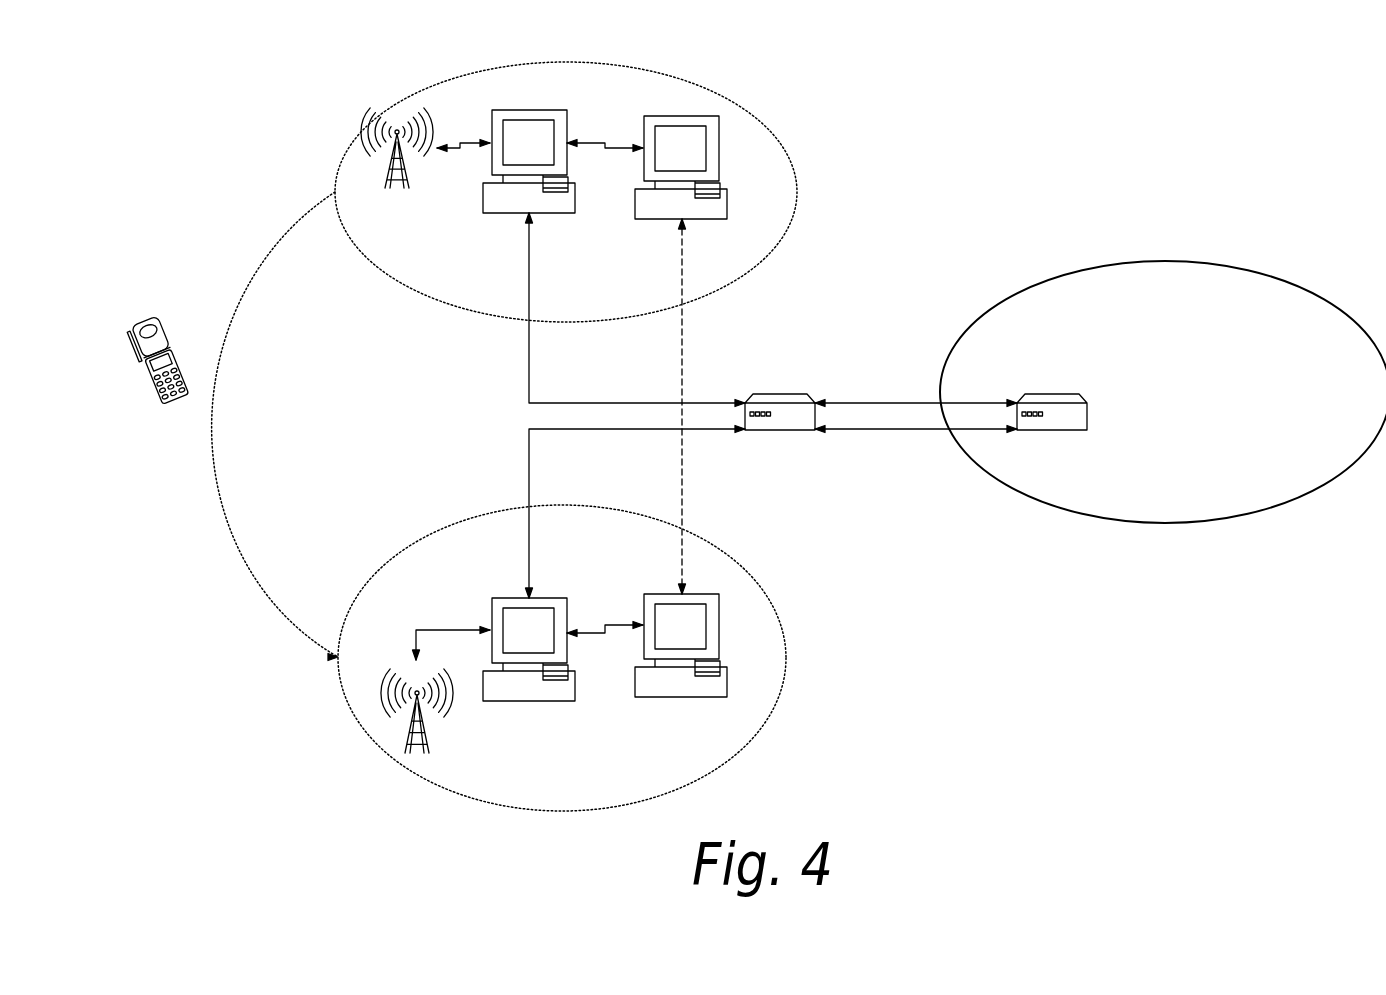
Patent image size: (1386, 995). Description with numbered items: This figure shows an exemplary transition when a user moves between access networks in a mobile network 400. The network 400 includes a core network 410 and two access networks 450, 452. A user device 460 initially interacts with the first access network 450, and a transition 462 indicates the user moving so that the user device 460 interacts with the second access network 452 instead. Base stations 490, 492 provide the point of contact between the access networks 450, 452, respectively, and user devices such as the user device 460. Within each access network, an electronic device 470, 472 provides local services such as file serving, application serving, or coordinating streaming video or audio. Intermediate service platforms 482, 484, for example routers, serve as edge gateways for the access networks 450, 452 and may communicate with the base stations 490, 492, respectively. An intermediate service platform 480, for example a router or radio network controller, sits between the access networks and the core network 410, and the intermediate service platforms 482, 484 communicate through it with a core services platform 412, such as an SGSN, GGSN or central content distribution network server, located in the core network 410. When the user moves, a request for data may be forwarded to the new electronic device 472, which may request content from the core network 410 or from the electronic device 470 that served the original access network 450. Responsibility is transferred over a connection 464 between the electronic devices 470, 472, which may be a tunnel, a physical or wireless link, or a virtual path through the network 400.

The network 400 is at (1115, 111).
The core network 410 is at (1160, 525).
The core services platform 412 is at (1040, 430).
The access network 450 is at (442, 373).
The access network 452 is at (429, 865).
The user device 460 is at (175, 408).
The transition 462 is at (263, 426).
The connection 464 is at (663, 406).
The electronic device 470 is at (693, 110).
The electronic device 472 is at (693, 707).
The intermediate service platform 480 is at (797, 435).
The intermediate service platform 482 is at (543, 103).
The intermediate service platform 484 is at (545, 592).
The base station 490 is at (397, 97).
The base station 492 is at (388, 660).